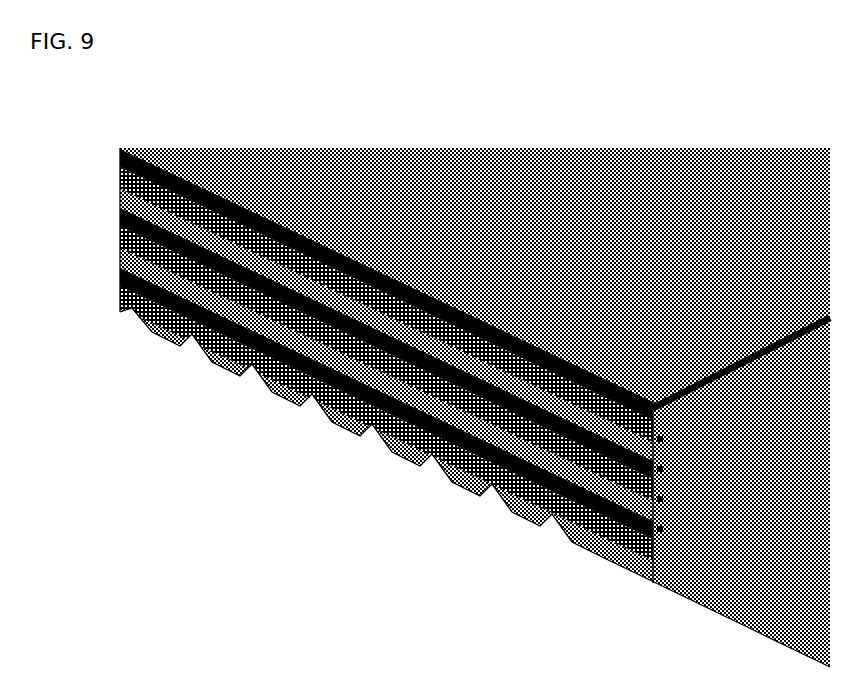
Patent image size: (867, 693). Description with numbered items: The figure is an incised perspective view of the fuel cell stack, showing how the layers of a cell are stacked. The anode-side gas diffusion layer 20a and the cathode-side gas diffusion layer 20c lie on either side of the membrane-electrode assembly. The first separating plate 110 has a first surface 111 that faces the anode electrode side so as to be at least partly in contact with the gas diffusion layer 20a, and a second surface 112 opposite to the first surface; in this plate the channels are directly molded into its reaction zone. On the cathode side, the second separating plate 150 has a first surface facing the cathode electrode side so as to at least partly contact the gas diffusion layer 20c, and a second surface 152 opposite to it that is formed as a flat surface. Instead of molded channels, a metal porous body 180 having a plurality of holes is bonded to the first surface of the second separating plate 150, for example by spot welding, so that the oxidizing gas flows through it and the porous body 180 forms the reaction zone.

The second separating plate 150 is at (426, 178).
The second surface 152 is at (563, 160).
The porous body 180 is at (277, 347).
The anode-side gas diffusion layer 20a is at (120, 175).
The cathode-side gas diffusion layer 20c is at (420, 307).
The second surface 112 is at (457, 480).
The first surface 111 is at (638, 566).
The first separating plate 110 is at (588, 566).